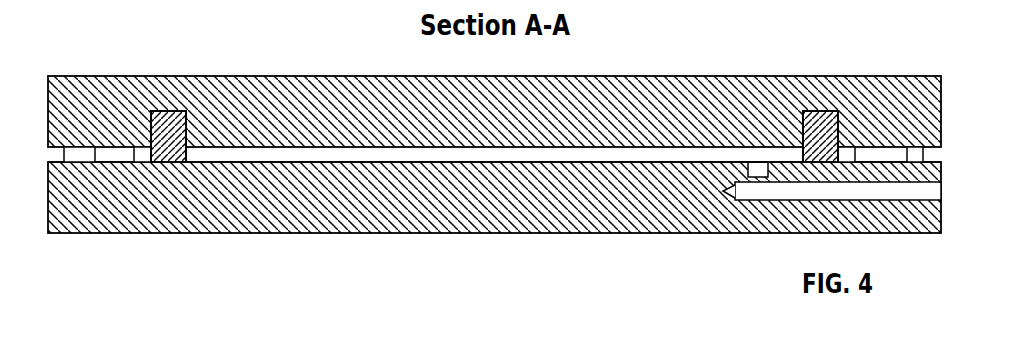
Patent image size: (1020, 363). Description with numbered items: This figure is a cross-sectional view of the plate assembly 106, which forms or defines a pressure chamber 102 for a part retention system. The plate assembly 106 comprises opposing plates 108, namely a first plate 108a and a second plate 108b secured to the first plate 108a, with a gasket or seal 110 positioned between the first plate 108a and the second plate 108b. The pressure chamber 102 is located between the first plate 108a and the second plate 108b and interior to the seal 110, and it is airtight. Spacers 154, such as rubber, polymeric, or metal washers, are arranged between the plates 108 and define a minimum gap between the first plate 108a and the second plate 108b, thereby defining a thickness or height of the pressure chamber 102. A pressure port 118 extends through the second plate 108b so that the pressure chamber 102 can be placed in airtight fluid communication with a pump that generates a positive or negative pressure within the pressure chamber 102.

The plate assembly 106 is at (485, 144).
The plates 108 is at (494, 163).
The first plate 108a is at (310, 88).
The second plate 108b is at (325, 212).
The seal 110 is at (167, 150).
The spacers 154 is at (95, 149).
The pressure chamber 102 is at (547, 162).
The pressure port 118 is at (793, 202).